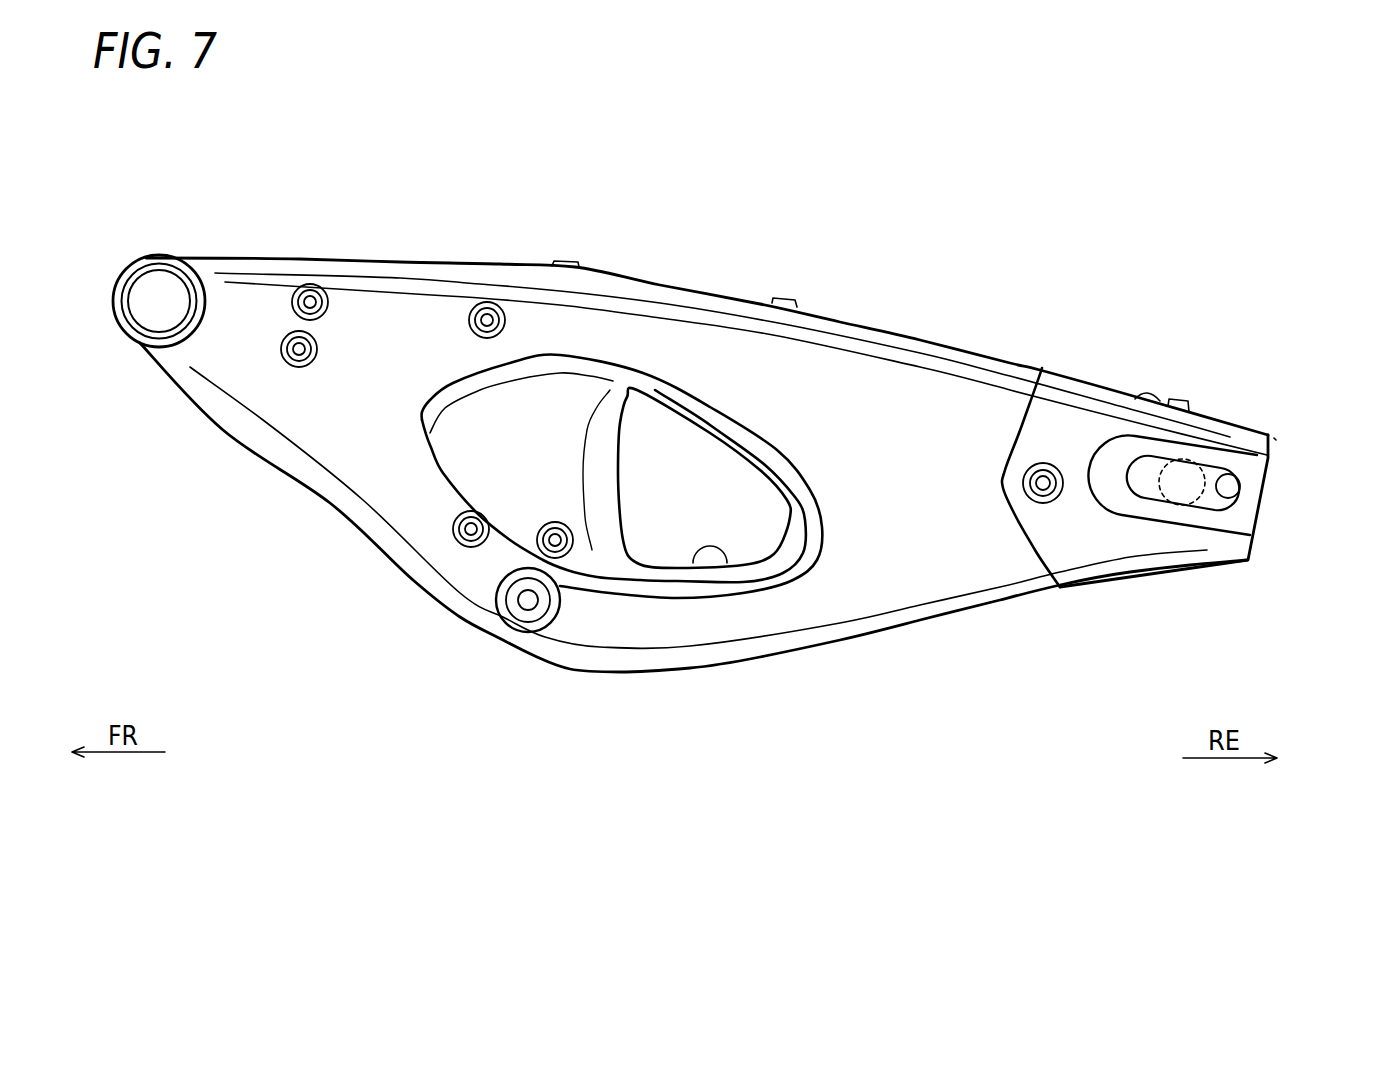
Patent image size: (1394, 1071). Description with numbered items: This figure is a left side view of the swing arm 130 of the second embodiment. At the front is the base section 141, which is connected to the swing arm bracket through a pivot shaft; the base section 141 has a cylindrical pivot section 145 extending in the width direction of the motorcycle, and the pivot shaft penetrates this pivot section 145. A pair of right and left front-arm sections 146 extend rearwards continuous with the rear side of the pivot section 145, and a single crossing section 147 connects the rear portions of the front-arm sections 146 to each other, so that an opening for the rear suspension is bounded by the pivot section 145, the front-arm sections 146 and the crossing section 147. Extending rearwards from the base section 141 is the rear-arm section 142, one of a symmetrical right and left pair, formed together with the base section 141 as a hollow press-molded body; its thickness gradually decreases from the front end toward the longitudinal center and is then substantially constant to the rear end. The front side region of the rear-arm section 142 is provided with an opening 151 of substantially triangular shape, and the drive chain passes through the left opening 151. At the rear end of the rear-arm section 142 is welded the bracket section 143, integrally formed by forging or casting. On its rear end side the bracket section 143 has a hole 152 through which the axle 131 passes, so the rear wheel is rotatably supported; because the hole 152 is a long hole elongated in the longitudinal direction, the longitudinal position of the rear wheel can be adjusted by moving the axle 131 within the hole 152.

The swing arm 130 is at (835, 142).
The axle 131 is at (1160, 493).
The base section 141 is at (214, 439).
The rear-arm section 142 is at (914, 326).
The bracket section 143 is at (1193, 584).
The pivot section 145 is at (143, 258).
The front-arm section 146 is at (400, 315).
The crossing section 147 is at (530, 323).
The opening 151 is at (691, 565).
The hole 152 is at (1238, 491).